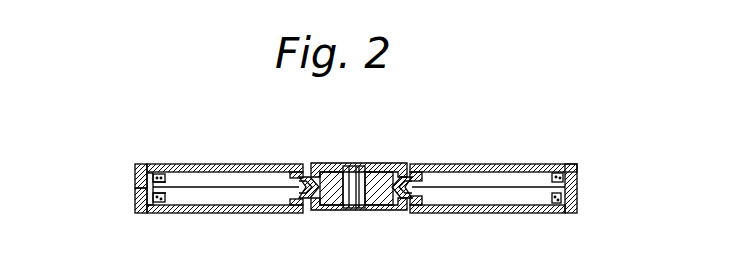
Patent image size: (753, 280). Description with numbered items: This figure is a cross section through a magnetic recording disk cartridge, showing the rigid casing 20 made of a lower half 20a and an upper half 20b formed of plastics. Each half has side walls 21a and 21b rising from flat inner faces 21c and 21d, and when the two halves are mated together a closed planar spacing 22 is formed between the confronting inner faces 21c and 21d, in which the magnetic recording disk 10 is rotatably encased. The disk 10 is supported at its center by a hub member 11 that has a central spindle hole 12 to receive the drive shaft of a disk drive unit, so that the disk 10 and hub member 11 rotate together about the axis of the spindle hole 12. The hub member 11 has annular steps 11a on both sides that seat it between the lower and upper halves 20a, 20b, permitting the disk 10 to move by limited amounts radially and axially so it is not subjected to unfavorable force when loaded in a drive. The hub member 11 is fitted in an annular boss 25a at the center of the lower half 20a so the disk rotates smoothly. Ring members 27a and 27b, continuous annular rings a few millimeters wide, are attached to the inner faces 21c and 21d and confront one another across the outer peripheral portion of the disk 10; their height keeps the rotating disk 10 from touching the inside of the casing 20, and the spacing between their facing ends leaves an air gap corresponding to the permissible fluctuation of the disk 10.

The magnetic recording disk 10 is at (488, 187).
The hub member 11 is at (330, 206).
The annular steps 11a is at (408, 205).
The central spindle hole 12 is at (358, 208).
The rigid casing 20 is at (542, 165).
The lower half 20a is at (458, 214).
The upper half 20b is at (440, 164).
The side walls of lower half 21a is at (142, 206).
The side walls of upper half 21b is at (133, 171).
The inner face of lower half 21c is at (242, 205).
The inner face of upper half 21d is at (212, 171).
The closed planar spacing 22 is at (207, 204).
The annular boss of lower half 25a is at (277, 201).
The ring member of lower half 27a is at (158, 204).
The ring member of upper half 27b is at (163, 165).